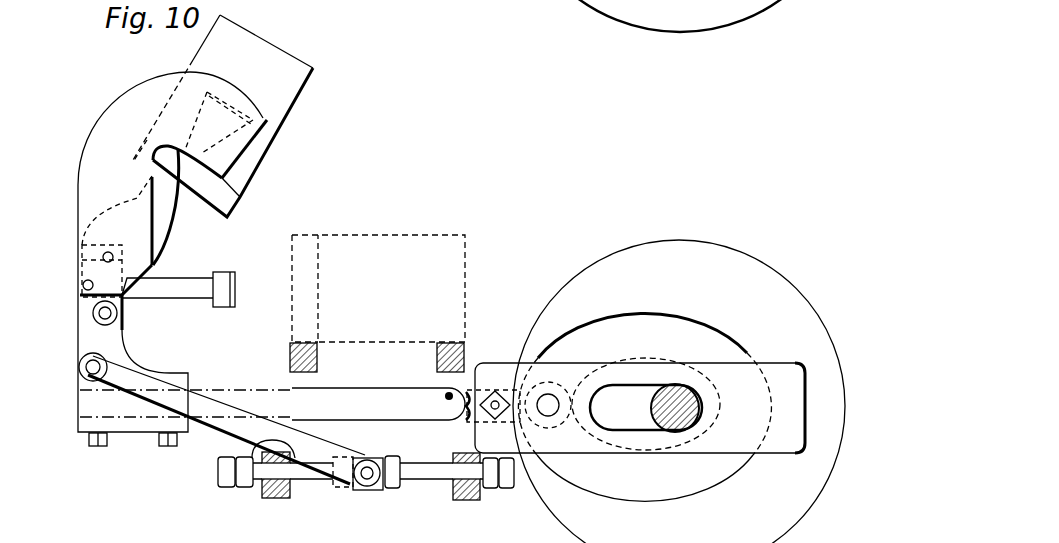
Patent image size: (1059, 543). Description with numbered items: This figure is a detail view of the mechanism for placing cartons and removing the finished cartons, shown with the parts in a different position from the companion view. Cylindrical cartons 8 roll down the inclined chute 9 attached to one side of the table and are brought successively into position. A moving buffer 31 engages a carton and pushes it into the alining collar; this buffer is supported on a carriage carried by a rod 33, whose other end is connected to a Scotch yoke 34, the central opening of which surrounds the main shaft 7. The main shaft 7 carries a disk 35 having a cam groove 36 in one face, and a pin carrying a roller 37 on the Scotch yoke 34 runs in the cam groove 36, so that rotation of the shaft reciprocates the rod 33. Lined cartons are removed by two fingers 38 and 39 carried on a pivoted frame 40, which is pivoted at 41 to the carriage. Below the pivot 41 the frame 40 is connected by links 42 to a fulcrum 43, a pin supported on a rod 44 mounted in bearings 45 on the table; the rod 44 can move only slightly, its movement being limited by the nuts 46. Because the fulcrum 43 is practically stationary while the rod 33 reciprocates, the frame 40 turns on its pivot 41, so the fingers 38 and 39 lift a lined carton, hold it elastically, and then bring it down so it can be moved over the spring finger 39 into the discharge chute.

The main shaft 7 is at (683, 400).
The carton 8 is at (223, 116).
The chute 9 is at (377, 306).
The moving buffer 31 is at (222, 275).
The rod 33 is at (381, 404).
The Scotch yoke 34 is at (636, 405).
The disk 35 is at (679, 380).
The cam groove 36 is at (644, 407).
The roller 37 is at (553, 383).
The finger 38 is at (260, 307).
The finger 39 is at (160, 205).
The pivoted frame 40 is at (95, 355).
The pivot 41 is at (112, 313).
The links 42 is at (223, 407).
The fulcrum 43 is at (372, 467).
The rod 44 is at (420, 467).
The bearings 45 is at (453, 488).
The nuts 46 is at (493, 490).